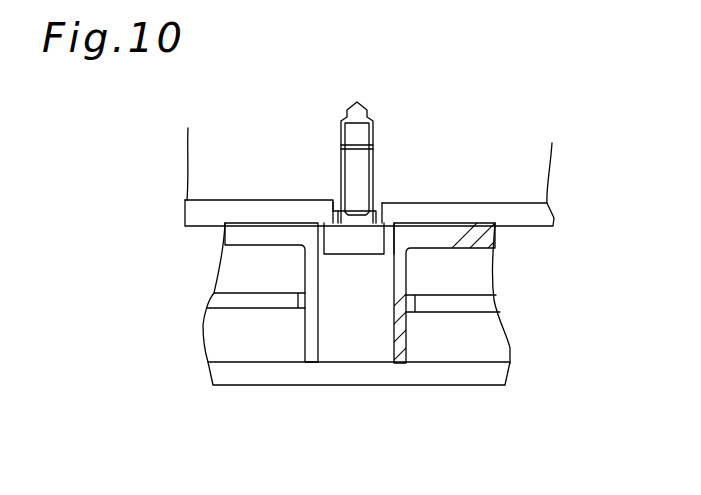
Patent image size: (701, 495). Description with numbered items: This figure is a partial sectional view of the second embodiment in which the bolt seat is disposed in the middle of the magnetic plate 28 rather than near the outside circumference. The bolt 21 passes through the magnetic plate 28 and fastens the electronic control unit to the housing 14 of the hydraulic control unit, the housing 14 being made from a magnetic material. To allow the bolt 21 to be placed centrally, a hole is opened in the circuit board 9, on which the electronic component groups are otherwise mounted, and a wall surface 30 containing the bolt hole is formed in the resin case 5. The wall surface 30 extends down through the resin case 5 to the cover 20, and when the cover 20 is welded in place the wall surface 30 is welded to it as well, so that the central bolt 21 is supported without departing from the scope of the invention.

The housing 14 is at (197, 143).
The magnetic plate 28 is at (493, 212).
The bolt 21 is at (358, 198).
The wall surface 30 is at (318, 298).
The resin case 5 is at (490, 242).
The circuit board 9 is at (490, 302).
The cover 20 is at (295, 373).